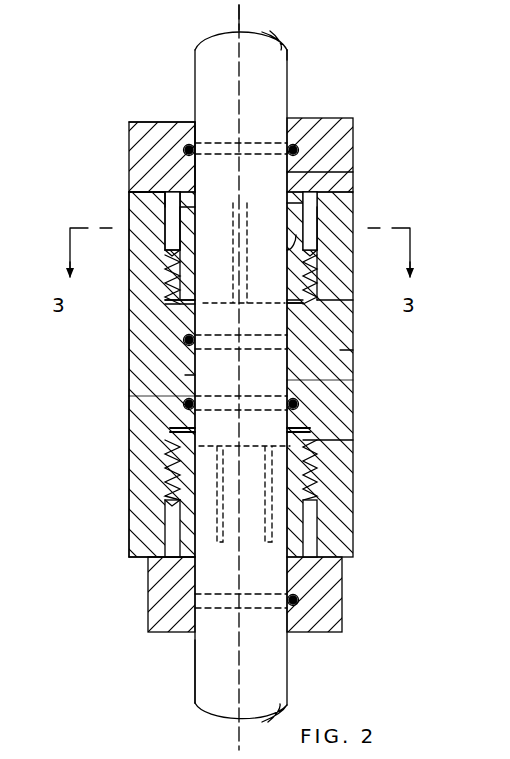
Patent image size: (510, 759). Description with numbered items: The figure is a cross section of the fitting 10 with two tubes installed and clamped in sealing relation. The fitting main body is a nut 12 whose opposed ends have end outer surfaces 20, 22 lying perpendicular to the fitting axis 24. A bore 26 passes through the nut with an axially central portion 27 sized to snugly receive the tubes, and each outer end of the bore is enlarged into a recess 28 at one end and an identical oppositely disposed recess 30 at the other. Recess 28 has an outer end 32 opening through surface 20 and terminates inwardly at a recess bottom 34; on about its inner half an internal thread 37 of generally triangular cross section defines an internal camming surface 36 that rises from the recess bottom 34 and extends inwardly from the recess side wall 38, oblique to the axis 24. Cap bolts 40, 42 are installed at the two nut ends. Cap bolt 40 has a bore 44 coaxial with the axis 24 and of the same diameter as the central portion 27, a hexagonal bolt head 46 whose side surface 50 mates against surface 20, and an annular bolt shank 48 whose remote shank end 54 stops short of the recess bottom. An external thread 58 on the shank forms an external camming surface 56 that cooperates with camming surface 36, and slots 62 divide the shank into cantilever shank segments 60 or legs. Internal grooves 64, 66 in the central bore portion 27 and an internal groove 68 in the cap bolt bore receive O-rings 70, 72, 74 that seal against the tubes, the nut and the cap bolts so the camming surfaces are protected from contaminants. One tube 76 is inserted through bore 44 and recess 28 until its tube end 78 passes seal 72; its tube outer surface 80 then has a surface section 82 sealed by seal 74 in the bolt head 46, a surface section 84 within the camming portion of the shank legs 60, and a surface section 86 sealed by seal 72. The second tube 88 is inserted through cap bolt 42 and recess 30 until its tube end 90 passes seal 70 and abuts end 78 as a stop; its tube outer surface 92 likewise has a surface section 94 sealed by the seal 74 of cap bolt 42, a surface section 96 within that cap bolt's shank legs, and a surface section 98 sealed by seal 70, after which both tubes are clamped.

The fitting 10 is at (124, 128).
The nut 12 is at (128, 463).
The end outer surface 20 is at (160, 193).
The end outer surface 22 is at (140, 557).
The fitting axis 24 is at (238, 26).
The bore 26 is at (190, 397).
The axially central portion 27 is at (178, 428).
The recess 28 is at (163, 229).
The recess 30 is at (178, 526).
The recess outer end 32 is at (165, 188).
The recess bottom 34 is at (187, 329).
The internal camming surface 36 is at (176, 303).
The internal thread 37 is at (176, 284).
The recess side wall 38 is at (342, 248).
The cap bolt 40 is at (129, 121).
The cap bolt 42 is at (147, 603).
The bore 44 is at (197, 125).
The bolt head 46 is at (129, 158).
The bolt shank 48 is at (353, 217).
The side surface 50 is at (170, 206).
The shank end 54 is at (338, 331).
The external camming surface 56 is at (340, 286).
The external thread 58 is at (338, 304).
The shank segments 60 is at (165, 266).
The slots 62 is at (232, 268).
The internal groove 64 is at (186, 405).
The internal groove 66 is at (186, 342).
The internal groove 68 is at (290, 150).
The O-ring 70 is at (297, 404).
The O-ring 72 is at (338, 352).
The O-ring 74 is at (187, 148).
The tube 76 is at (290, 70).
The tube end 78 is at (330, 381).
The tube outer surface 80 is at (288, 60).
The surface section 82 is at (328, 176).
The surface section 84 is at (297, 252).
The surface section 86 is at (292, 356).
The tube 88 is at (289, 645).
The tube end 90 is at (192, 375).
The tube outer surface 92 is at (195, 677).
The surface section 94 is at (330, 569).
The surface section 96 is at (330, 456).
The surface section 98 is at (312, 428).